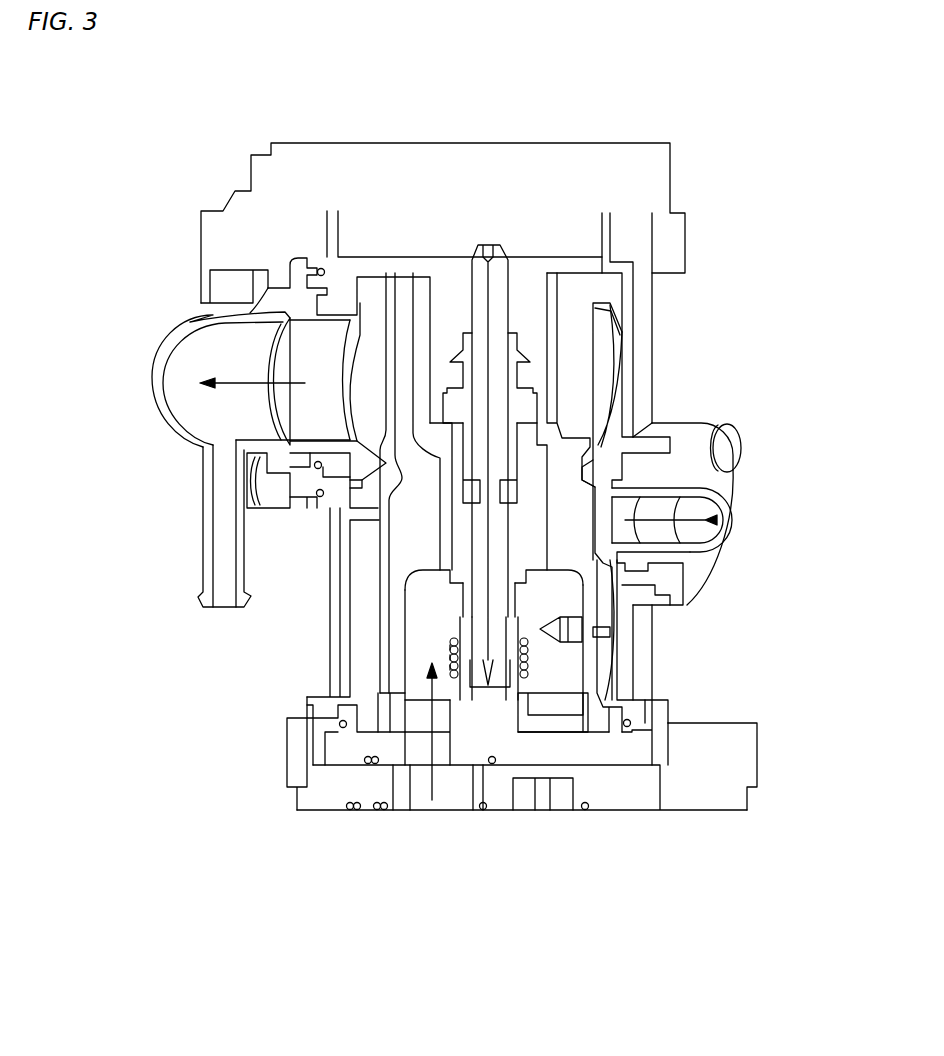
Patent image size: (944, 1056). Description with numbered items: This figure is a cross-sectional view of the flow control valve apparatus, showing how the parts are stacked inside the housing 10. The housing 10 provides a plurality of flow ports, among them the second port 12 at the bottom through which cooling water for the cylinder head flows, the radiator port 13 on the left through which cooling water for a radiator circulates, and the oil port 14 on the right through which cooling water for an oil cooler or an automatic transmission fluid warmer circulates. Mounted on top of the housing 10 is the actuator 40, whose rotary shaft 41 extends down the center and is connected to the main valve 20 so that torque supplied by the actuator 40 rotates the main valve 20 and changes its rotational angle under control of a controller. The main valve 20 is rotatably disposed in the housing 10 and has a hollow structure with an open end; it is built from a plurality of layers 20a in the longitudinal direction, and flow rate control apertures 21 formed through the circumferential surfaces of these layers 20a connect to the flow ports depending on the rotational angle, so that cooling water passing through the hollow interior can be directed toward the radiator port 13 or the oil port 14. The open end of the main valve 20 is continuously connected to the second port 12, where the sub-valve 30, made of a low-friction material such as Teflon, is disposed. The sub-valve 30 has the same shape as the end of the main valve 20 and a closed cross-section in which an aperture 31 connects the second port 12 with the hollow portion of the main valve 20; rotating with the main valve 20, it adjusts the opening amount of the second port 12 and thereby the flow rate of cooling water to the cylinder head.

The housing 10 is at (632, 822).
The second port 12 is at (403, 753).
The radiator port 13 is at (193, 365).
The oil port 14 is at (667, 470).
The main valve 20 is at (512, 527).
The layers 20a is at (600, 389).
The flow rate control apertures 21 is at (367, 637).
The sub-valve 30 is at (563, 723).
The aperture 31 is at (395, 725).
The actuator 40 is at (437, 190).
The rotary shaft 41 is at (500, 381).